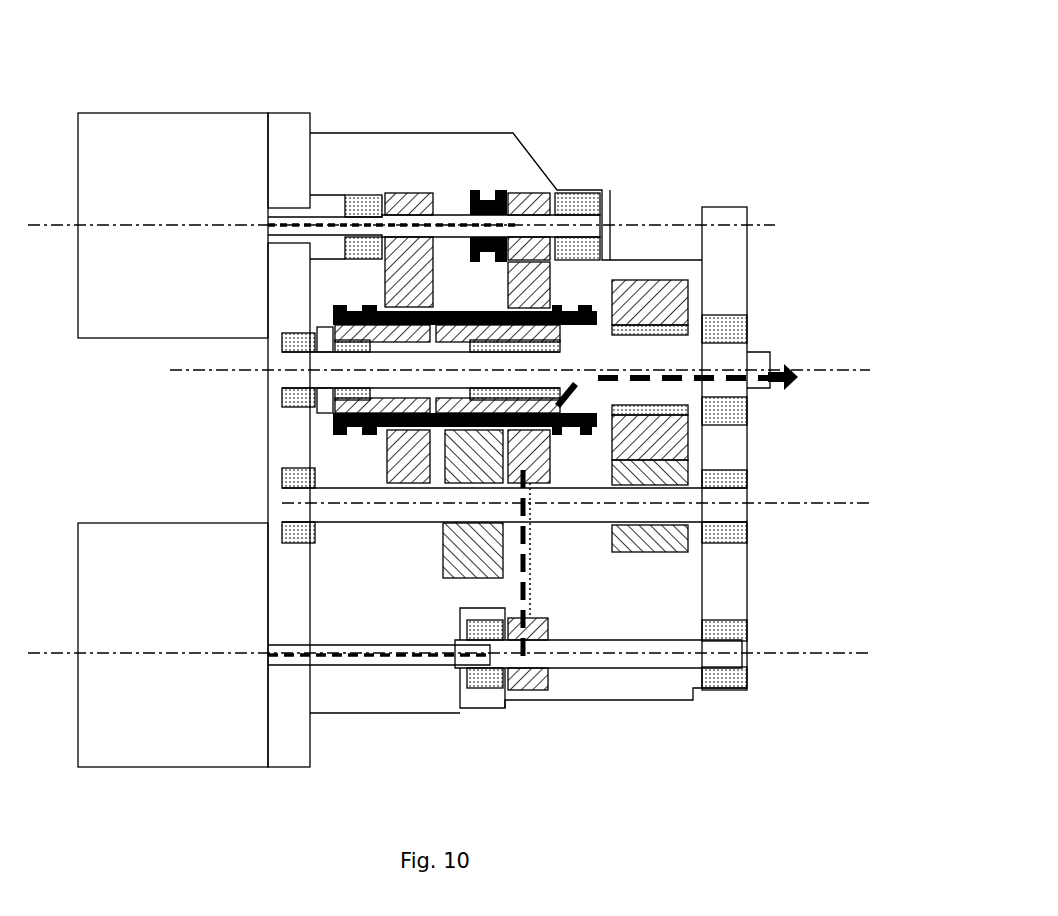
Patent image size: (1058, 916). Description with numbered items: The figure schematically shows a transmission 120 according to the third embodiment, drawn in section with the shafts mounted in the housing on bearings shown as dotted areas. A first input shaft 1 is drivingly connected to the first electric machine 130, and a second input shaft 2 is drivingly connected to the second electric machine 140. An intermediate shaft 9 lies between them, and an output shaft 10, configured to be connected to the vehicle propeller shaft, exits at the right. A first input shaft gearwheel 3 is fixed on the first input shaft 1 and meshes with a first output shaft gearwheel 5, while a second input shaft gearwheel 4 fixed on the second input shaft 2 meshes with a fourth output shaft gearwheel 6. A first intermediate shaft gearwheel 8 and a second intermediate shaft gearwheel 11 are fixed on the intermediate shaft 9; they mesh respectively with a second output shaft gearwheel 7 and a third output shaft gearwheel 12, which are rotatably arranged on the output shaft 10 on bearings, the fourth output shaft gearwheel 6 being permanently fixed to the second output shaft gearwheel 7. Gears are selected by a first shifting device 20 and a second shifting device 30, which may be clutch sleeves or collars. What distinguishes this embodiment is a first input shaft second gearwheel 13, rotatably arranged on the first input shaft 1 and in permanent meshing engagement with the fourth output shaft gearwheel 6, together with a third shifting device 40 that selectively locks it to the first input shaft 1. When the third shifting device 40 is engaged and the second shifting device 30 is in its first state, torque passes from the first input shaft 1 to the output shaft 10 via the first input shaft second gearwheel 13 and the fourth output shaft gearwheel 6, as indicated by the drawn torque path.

The first input shaft 1 is at (457, 216).
The second input shaft 2 is at (590, 668).
The first input shaft gearwheel 3 is at (416, 192).
The second input shaft gearwheel 4 is at (522, 690).
The first output shaft gearwheel 5 is at (405, 483).
The fourth output shaft gearwheel 6 is at (540, 483).
The second output shaft gearwheel 7 is at (463, 312).
The first intermediate shaft gearwheel 8 is at (455, 578).
The intermediate shaft 9 is at (352, 518).
The output shaft 10 is at (570, 330).
The second intermediate shaft gearwheel 11 is at (628, 552).
The third output shaft gearwheel 12 is at (660, 300).
The first input shaft second gearwheel 13 is at (537, 198).
The first shifting device 20 is at (335, 428).
The second shifting device 30 is at (585, 305).
The third shifting device 40 is at (488, 196).
The transmission 120 is at (702, 112).
The first electric machine 130 is at (162, 197).
The second electric machine 140 is at (162, 607).